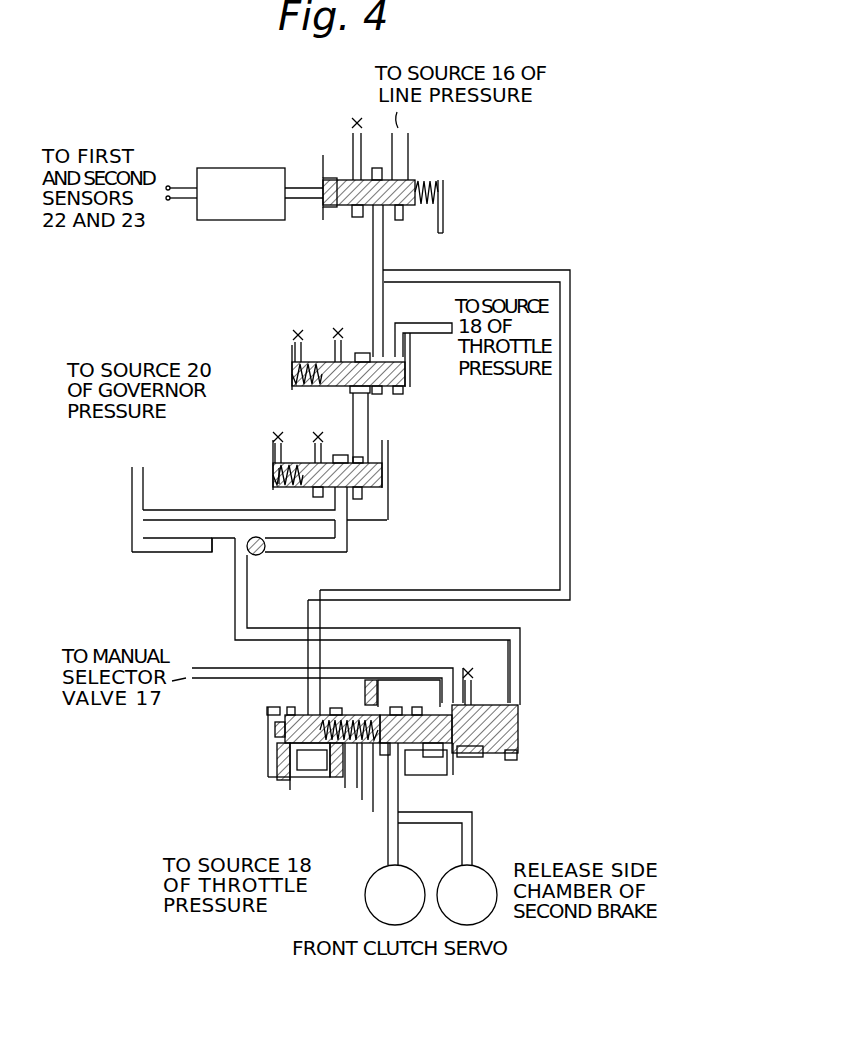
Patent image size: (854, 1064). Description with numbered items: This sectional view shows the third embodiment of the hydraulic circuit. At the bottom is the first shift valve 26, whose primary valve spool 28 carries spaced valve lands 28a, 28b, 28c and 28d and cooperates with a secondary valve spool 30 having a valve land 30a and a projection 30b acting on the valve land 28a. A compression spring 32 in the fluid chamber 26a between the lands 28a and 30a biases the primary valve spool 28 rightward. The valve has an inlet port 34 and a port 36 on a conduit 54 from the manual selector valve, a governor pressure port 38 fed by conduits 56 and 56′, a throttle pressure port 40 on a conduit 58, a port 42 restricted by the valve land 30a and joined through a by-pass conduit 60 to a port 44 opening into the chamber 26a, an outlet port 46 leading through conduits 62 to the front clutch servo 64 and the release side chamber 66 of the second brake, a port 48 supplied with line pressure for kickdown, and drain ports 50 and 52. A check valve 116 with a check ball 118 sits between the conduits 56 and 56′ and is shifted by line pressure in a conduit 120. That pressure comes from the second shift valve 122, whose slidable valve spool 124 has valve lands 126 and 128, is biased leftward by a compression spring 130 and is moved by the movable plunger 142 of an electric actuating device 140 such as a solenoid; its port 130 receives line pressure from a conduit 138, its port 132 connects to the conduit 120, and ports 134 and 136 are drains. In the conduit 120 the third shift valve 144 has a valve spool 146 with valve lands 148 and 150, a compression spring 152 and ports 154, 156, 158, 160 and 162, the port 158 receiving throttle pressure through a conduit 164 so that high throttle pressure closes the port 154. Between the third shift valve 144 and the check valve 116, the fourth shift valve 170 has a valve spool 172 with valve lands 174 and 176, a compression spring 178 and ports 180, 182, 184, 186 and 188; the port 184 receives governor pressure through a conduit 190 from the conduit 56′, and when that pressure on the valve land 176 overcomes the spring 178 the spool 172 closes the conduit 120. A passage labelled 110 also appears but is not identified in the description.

The first shift valve 26 is at (539, 713).
The fluid chamber 26a is at (366, 760).
The primary valve spool 28 is at (522, 733).
The valve land 28a is at (392, 841).
The valve land 28b is at (430, 750).
The valve land 28c is at (470, 754).
The valve land 28d is at (517, 757).
The secondary valve spool 30 is at (278, 727).
The valve land 30a is at (283, 716).
The projection 30b is at (330, 712).
The compression spring 32 is at (352, 805).
The inlet port 34 is at (368, 703).
The port 36 is at (455, 703).
The governor pressure port 38 is at (512, 698).
The throttle pressure port 40 is at (274, 750).
The port 42 is at (296, 776).
The port 44 is at (345, 780).
The outlet port 46 is at (404, 758).
The port 48 is at (308, 718).
The drain port 50 is at (405, 706).
The drain port 52 is at (519, 649).
The conduit 54 is at (215, 666).
The conduit 56 is at (248, 598).
The conduit 56′ is at (140, 480).
The conduit 58 is at (278, 773).
The by-pass conduit 60 is at (313, 774).
The conduits 62 is at (400, 805).
The front clutch servo 64 is at (363, 935).
The release side chamber of second brake 66 is at (510, 868).
The passage 110 is at (478, 593).
The check valve 116 is at (220, 556).
The check ball 118 is at (266, 552).
The conduit 120 is at (372, 262).
The second shift valve 122 is at (462, 192).
The valve spool 124 is at (371, 216).
The valve land 126 is at (356, 207).
The valve land 128 is at (407, 182).
The compression spring 130 is at (396, 172).
The port 132 is at (384, 213).
The drain port 134 is at (351, 142).
The drain port 136 is at (444, 215).
The conduit 138 is at (409, 148).
The electric actuating device 140 is at (248, 180).
The movable plunger 142 is at (300, 200).
The third shift valve 144 is at (410, 370).
The valve spool 146 is at (376, 394).
The valve land 148 is at (318, 358).
The valve land 150 is at (426, 410).
The compression spring 152 is at (292, 378).
The port 154 is at (393, 345).
The port 156 is at (350, 390).
The port 158 is at (406, 362).
The port 160 is at (335, 352).
The port 162 is at (290, 365).
The conduit 164 is at (452, 322).
The fourth shift valve 170 is at (418, 470).
The valve spool 172 is at (280, 476).
The valve land 174 is at (275, 452).
The valve land 176 is at (392, 456).
The compression spring 178 is at (278, 486).
The port 180 is at (368, 446).
The port 182 is at (318, 492).
The port 184 is at (389, 494).
The port 186 is at (316, 455).
The port 188 is at (272, 462).
The conduit 190 is at (190, 508).